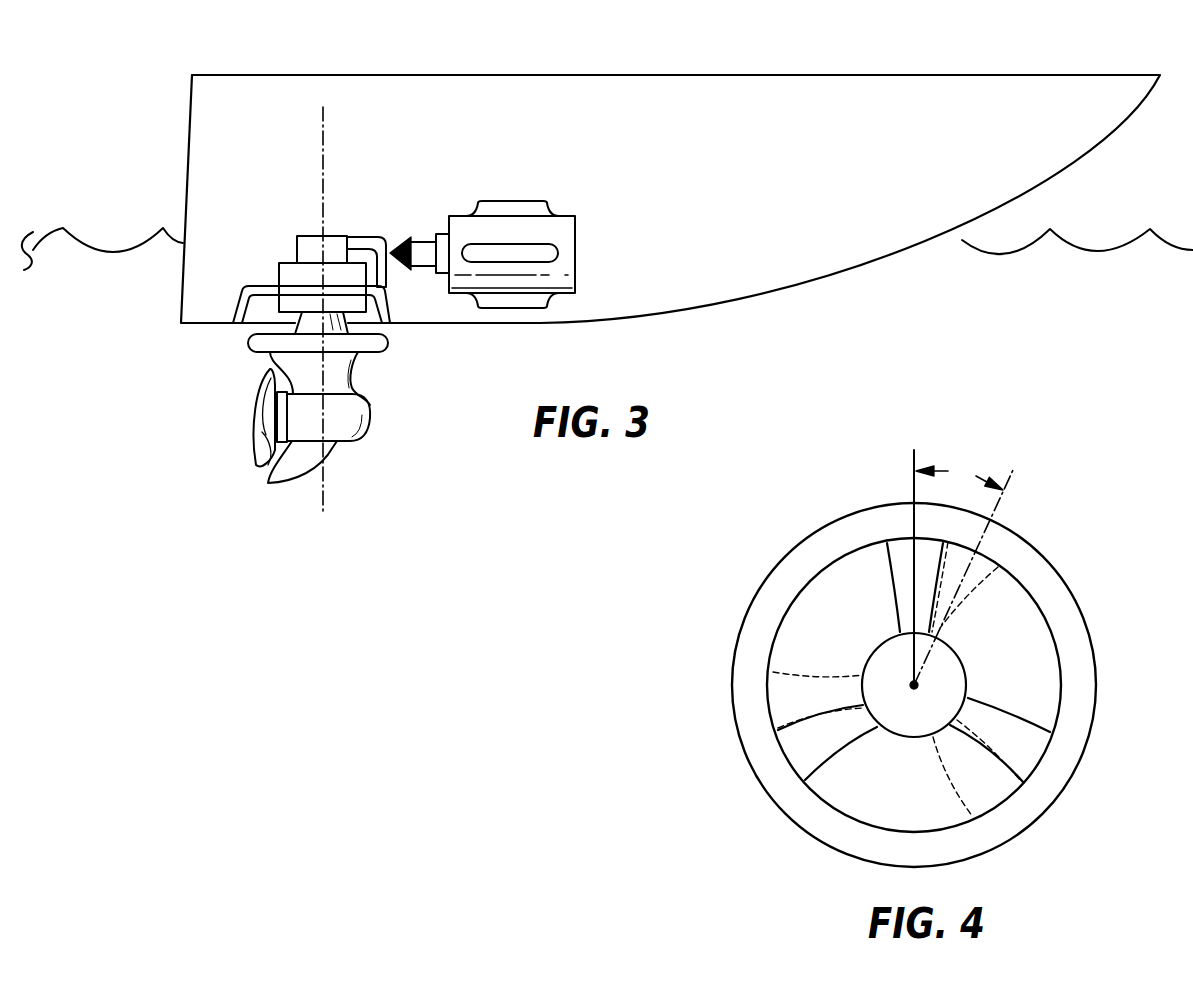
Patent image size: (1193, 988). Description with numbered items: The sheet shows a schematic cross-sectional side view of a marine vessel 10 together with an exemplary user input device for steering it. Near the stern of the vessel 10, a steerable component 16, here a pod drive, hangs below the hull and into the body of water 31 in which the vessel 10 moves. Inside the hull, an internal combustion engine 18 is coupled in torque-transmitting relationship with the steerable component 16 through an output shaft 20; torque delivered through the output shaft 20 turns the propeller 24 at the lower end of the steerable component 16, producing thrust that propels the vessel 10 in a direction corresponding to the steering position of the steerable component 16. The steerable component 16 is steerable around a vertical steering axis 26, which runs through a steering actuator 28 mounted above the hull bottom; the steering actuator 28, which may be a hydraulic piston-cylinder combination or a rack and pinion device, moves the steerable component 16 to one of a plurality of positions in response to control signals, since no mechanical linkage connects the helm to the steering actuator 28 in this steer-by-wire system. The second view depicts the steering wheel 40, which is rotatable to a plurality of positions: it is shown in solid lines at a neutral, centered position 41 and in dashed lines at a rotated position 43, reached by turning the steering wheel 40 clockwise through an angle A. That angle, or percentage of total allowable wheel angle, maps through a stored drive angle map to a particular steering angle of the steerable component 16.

In FIG. 3, the marine vessel 10 is at (527, 75).
In FIG. 3, the steerable component 16 is at (392, 367).
In FIG. 3, the internal combustion engine 18 is at (563, 215).
In FIG. 3, the output shaft 20 is at (425, 242).
In FIG. 3, the propeller 24 is at (250, 426).
In FIG. 3, the steering axis 26 is at (328, 183).
In FIG. 3, the steering actuator 28 is at (272, 256).
In FIG. 3, the body of water 31 is at (1123, 245).
In FIG. 4, the steering wheel 40 is at (1085, 568).
In FIG. 4, the neutral, centered position 41 is at (893, 577).
In FIG. 4, the dashed line position 43 is at (975, 590).